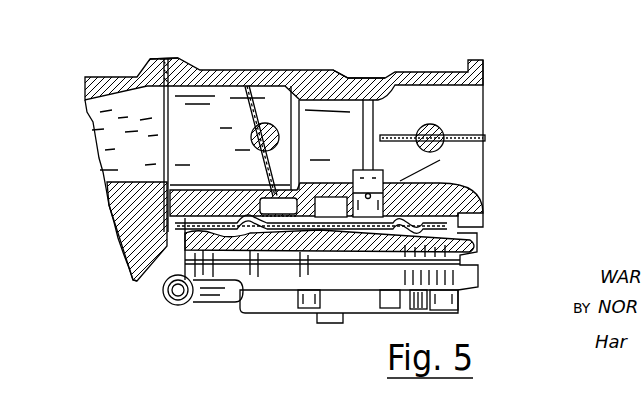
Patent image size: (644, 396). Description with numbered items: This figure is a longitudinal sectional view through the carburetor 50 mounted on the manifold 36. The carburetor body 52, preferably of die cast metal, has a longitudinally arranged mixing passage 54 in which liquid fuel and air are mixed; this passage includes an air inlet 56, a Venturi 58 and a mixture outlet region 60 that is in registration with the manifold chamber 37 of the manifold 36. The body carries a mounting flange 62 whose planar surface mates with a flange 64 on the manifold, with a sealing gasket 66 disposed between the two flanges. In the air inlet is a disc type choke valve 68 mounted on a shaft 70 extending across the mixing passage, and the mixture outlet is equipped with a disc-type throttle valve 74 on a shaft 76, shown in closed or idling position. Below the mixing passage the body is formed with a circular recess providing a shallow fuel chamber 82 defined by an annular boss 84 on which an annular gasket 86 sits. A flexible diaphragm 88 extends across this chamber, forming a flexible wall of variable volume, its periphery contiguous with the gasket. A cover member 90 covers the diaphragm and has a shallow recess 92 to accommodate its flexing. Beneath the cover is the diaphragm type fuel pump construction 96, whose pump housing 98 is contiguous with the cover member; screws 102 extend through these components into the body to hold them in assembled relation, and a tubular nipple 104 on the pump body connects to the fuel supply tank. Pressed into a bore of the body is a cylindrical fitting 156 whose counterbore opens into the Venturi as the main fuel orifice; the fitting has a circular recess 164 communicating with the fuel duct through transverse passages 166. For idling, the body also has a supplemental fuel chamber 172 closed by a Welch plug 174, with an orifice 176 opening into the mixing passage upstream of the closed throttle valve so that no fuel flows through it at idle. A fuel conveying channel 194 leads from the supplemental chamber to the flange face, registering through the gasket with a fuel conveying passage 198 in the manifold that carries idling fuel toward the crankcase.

The manifold 36 is at (97, 77).
The manifold chamber 37 is at (115, 156).
The carburetor 50 is at (374, 63).
The body 52 is at (304, 70).
The mixing passage 54 is at (318, 112).
The air inlet 56 is at (483, 88).
The Venturi 58 is at (373, 112).
The mixture outlet region 60 is at (140, 70).
The mounting flange 62 is at (177, 57).
The flange 64 is at (187, 123).
The sealing gasket 66 is at (167, 57).
The choke valve 68 is at (466, 133).
The shaft 70 is at (441, 128).
The throttle valve 74 is at (247, 122).
The shaft 76 is at (265, 122).
The fuel chamber 82 is at (430, 193).
The annular boss 84 is at (460, 197).
The annular gasket 86 is at (467, 214).
The diaphragm 88 is at (483, 254).
The cover member 90 is at (462, 237).
The recess 92 is at (318, 230).
The fuel pump construction 96 is at (482, 291).
The pump housing 98 is at (383, 275).
The screws 102 is at (418, 313).
The tubular nipple 104 is at (197, 303).
The fitting 156 is at (358, 170).
The circular recess 164 is at (402, 181).
The transverse passages 166 is at (368, 196).
The supplemental fuel chamber 172 is at (267, 197).
The Welch plug 174 is at (268, 220).
The orifice 176 is at (287, 190).
The fuel conveying channel 194 is at (172, 204).
The fuel conveying passage 198 is at (122, 257).